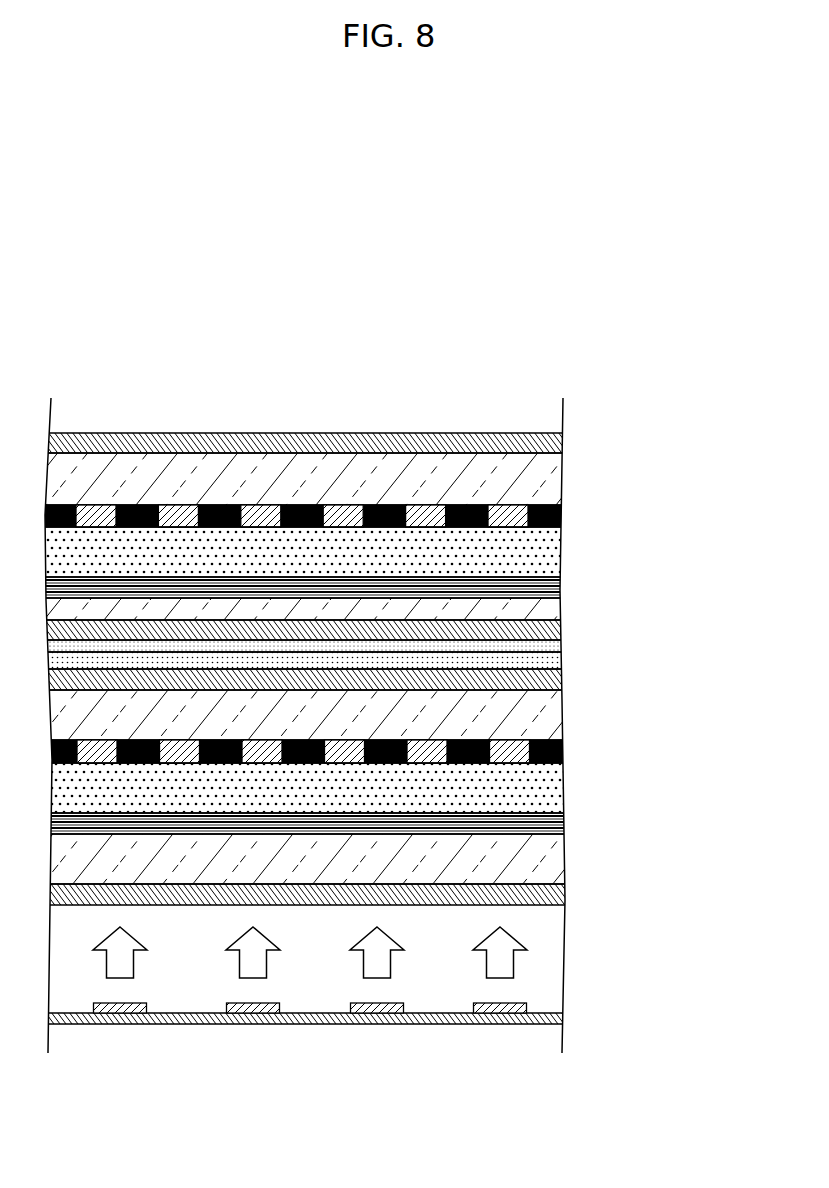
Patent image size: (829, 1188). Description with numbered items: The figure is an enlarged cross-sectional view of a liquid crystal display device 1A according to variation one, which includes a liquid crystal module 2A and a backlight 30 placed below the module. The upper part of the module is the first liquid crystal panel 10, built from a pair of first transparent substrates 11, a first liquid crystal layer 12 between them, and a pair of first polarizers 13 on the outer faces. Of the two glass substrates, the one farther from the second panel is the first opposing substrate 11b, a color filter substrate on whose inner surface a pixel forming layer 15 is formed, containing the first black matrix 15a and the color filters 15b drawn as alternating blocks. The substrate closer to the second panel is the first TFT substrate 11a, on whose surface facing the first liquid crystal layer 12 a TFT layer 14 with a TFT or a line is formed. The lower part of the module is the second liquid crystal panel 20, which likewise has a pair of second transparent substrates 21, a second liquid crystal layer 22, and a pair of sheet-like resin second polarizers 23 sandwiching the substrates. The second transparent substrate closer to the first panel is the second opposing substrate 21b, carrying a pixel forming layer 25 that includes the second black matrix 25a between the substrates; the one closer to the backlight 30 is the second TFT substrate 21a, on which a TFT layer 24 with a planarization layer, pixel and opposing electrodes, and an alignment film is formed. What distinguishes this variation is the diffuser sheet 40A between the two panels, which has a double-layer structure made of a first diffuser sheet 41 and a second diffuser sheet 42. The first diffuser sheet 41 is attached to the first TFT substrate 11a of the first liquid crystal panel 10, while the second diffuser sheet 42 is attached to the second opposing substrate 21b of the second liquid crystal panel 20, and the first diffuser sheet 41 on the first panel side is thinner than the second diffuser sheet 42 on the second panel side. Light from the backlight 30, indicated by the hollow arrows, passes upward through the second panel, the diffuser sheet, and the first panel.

The liquid crystal display device 1A is at (633, 392).
The liquid crystal module 2A is at (737, 497).
The first liquid crystal panel 10 is at (689, 413).
The first transparent substrate 11 is at (367, 530).
The first TFT substrate 11a is at (553, 610).
The first opposing substrate 11b is at (560, 470).
The first liquid crystal layer 12 is at (558, 553).
The first polarizer 13 is at (560, 441).
The TFT layer 14 is at (560, 587).
The pixel forming layer 15 is at (639, 473).
The first black matrix 15a is at (538, 528).
The color filter 15b is at (506, 512).
The second liquid crystal panel 20 is at (689, 677).
The second transparent substrate 21 is at (367, 787).
The second TFT substrate 21a is at (560, 860).
The second opposing substrate 21b is at (553, 720).
The second liquid crystal layer 22 is at (560, 797).
The second polarizer 23 is at (556, 690).
The TFT layer 24 is at (560, 822).
The pixel forming layer 25 is at (338, 757).
The second black matrix 25a is at (543, 766).
The backlight 30 is at (540, 1022).
The diffuser sheet 40A is at (622, 627).
The first diffuser sheet 41 is at (553, 646).
The second diffuser sheet 42 is at (553, 660).